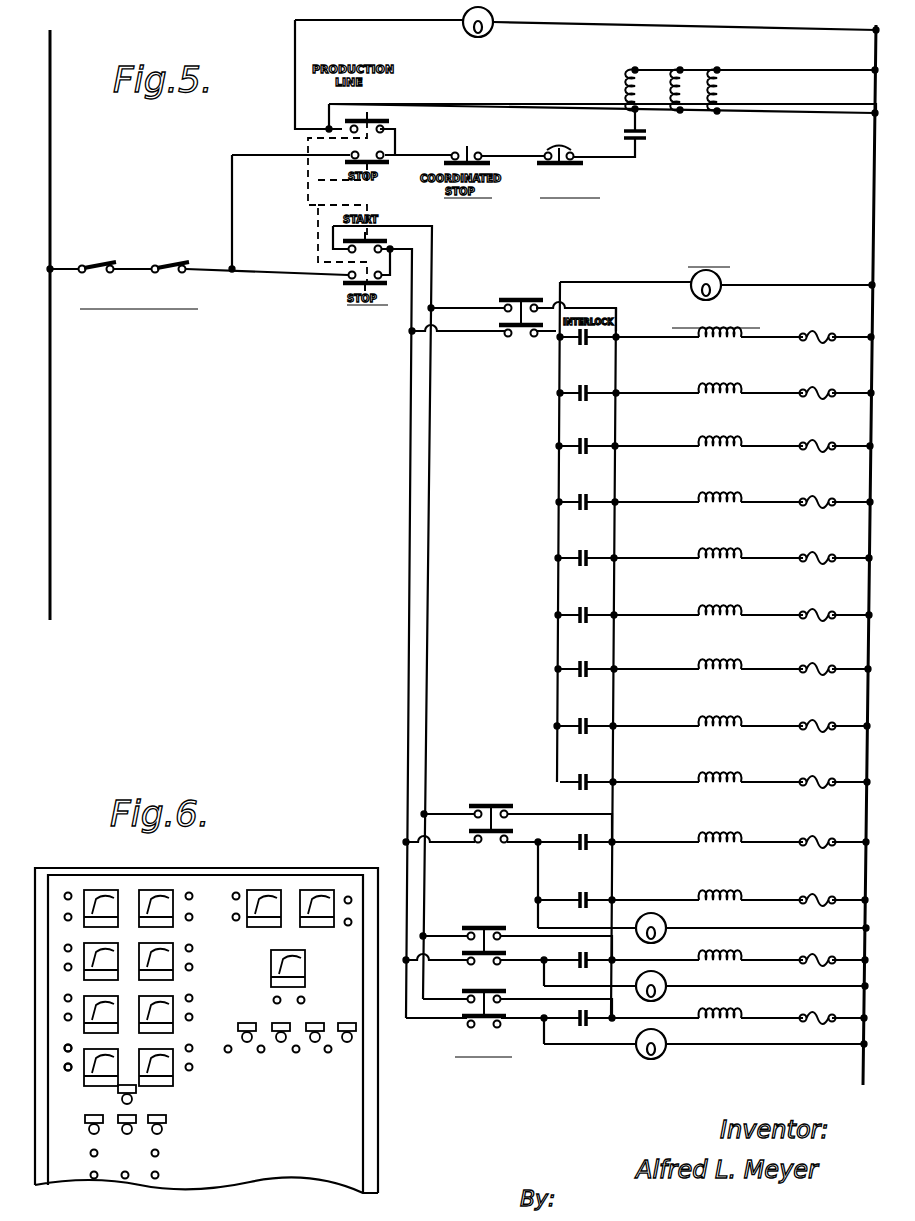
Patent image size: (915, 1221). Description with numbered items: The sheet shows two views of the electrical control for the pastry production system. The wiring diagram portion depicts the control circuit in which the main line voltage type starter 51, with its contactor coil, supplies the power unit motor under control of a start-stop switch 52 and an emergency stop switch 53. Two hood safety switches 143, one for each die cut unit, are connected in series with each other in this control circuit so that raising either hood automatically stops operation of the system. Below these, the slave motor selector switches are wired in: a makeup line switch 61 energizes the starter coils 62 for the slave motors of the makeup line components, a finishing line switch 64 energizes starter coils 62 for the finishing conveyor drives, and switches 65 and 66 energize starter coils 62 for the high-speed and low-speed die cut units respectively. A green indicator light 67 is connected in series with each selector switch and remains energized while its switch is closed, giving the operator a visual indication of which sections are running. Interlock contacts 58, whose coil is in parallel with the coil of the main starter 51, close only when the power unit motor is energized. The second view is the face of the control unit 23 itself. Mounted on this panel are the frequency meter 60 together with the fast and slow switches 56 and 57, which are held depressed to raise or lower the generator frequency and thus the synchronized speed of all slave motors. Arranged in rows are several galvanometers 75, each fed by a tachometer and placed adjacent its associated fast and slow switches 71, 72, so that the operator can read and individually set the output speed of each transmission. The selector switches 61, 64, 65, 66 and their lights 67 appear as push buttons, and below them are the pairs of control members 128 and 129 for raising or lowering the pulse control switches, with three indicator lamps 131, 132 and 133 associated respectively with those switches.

In FIG. 5, the safety switch 143 is at (168, 263).
In FIG. 5, the line voltage type starter 51 is at (628, 85).
In FIG. 5, the start-stop switch 52 is at (400, 131).
In FIG. 5, the emergency stop switch 53 is at (562, 153).
In FIG. 5, the makeup line switch 61 is at (521, 299).
In FIG. 6, the makeup line switch 61 is at (224, 1046).
In FIG. 5, the light 67 is at (720, 275).
In FIG. 6, the light 67 is at (246, 1043).
In FIG. 5, the starter coils 62 is at (718, 390).
In FIG. 5, the finishing line switch 64 is at (510, 808).
In FIG. 6, the finishing line switch 64 is at (262, 1054).
In FIG. 5, the high-speed die cut switch 65 is at (502, 926).
In FIG. 6, the high-speed die cut switch 65 is at (297, 1054).
In FIG. 5, the low-speed die cut switch 66 is at (472, 990).
In FIG. 6, the low-speed die cut switch 66 is at (329, 1054).
In FIG. 5, the interlock contacts 58 is at (574, 1028).
In FIG. 6, the control unit 23 is at (99, 868).
In FIG. 6, the fast switch 71 is at (68, 890).
In FIG. 6, the slow switch 72 is at (64, 917).
In FIG. 6, the galvanometer 75 is at (150, 890).
In FIG. 6, the fast switch 56 is at (64, 1048).
In FIG. 6, the slow switch 57 is at (64, 1068).
In FIG. 6, the frequency meter 60 is at (102, 1082).
In FIG. 6, the indicator lamp 131 is at (88, 1130).
In FIG. 6, the indicator lamp 132 is at (132, 1128).
In FIG. 6, the indicator lamp 133 is at (162, 1130).
In FIG. 6, the control member 128 is at (90, 1156).
In FIG. 6, the control member 129 is at (152, 1180).